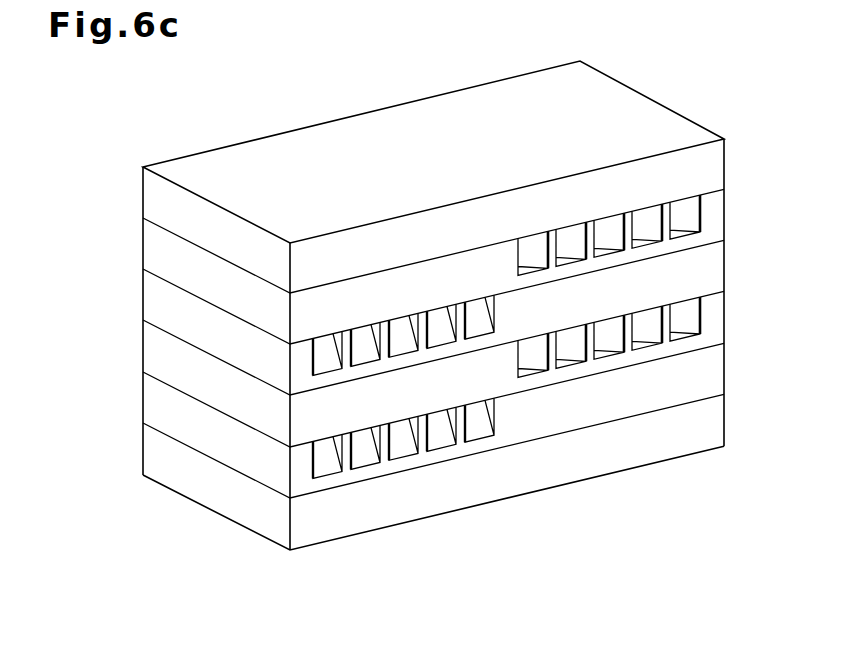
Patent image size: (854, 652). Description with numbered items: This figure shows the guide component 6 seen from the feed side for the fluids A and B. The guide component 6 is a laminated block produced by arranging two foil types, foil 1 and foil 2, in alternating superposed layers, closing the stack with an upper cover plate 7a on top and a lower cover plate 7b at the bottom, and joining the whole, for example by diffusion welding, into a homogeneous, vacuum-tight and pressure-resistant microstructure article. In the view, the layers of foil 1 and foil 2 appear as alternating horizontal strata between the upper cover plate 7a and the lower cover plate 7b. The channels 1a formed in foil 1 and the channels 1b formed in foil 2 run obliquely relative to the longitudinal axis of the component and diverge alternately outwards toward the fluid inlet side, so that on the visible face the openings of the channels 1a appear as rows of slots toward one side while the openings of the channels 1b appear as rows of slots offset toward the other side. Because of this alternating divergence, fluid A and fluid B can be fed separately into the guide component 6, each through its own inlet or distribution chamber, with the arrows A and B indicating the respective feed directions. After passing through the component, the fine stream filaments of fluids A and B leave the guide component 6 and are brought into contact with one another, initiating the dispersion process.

The guide component 6 is at (399, 158).
The upper cover plate 7a is at (690, 170).
The lower cover plate 7b is at (622, 448).
The foil type 1 is at (165, 258).
The foil type 2 is at (165, 308).
The channels 1a is at (688, 317).
The channels 1b is at (328, 458).
The fluid A is at (622, 394).
The fluid B is at (438, 486).